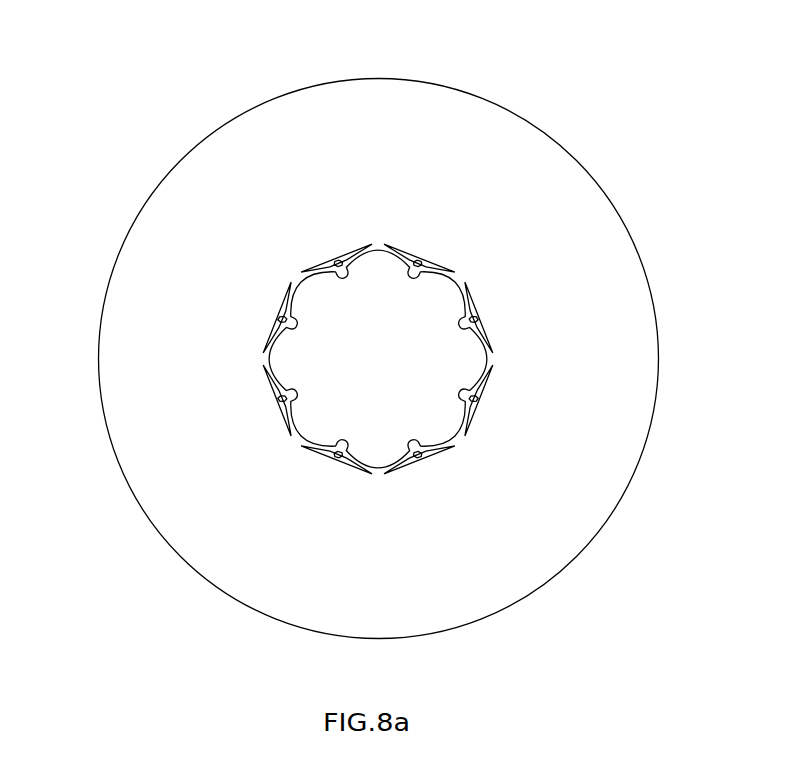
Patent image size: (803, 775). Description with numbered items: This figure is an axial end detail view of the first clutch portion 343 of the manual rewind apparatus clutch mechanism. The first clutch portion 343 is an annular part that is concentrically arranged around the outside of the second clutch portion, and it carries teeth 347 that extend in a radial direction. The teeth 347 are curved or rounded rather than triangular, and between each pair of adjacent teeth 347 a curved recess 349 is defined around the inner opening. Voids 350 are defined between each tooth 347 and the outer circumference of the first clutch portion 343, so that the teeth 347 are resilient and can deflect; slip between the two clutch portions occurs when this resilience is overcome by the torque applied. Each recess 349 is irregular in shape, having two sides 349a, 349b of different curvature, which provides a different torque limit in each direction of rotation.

The first clutch portion 343 is at (219, 103).
The teeth 347 is at (432, 280).
The voids 350 is at (415, 255).
The curved recesses 349 is at (307, 272).
The side 349a is at (291, 304).
The side 349b is at (316, 271).